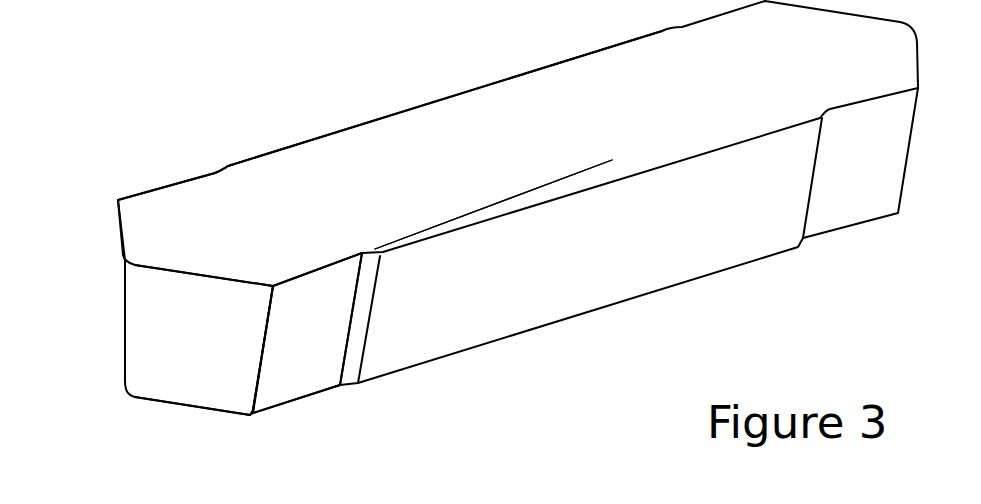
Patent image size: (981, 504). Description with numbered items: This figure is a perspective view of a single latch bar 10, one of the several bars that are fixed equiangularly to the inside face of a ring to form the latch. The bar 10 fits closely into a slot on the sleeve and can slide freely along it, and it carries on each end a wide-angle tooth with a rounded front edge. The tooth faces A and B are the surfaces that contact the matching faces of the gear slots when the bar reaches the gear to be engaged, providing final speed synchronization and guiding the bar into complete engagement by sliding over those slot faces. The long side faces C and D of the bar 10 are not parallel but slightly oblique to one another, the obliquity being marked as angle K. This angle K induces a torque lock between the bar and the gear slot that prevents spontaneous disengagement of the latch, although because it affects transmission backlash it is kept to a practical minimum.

The latch bar 10 is at (475, 115).
The bar face A is at (123, 296).
The bar face B is at (187, 372).
The bar face C is at (174, 183).
The bar face D is at (302, 372).
The angle K is at (655, 207).